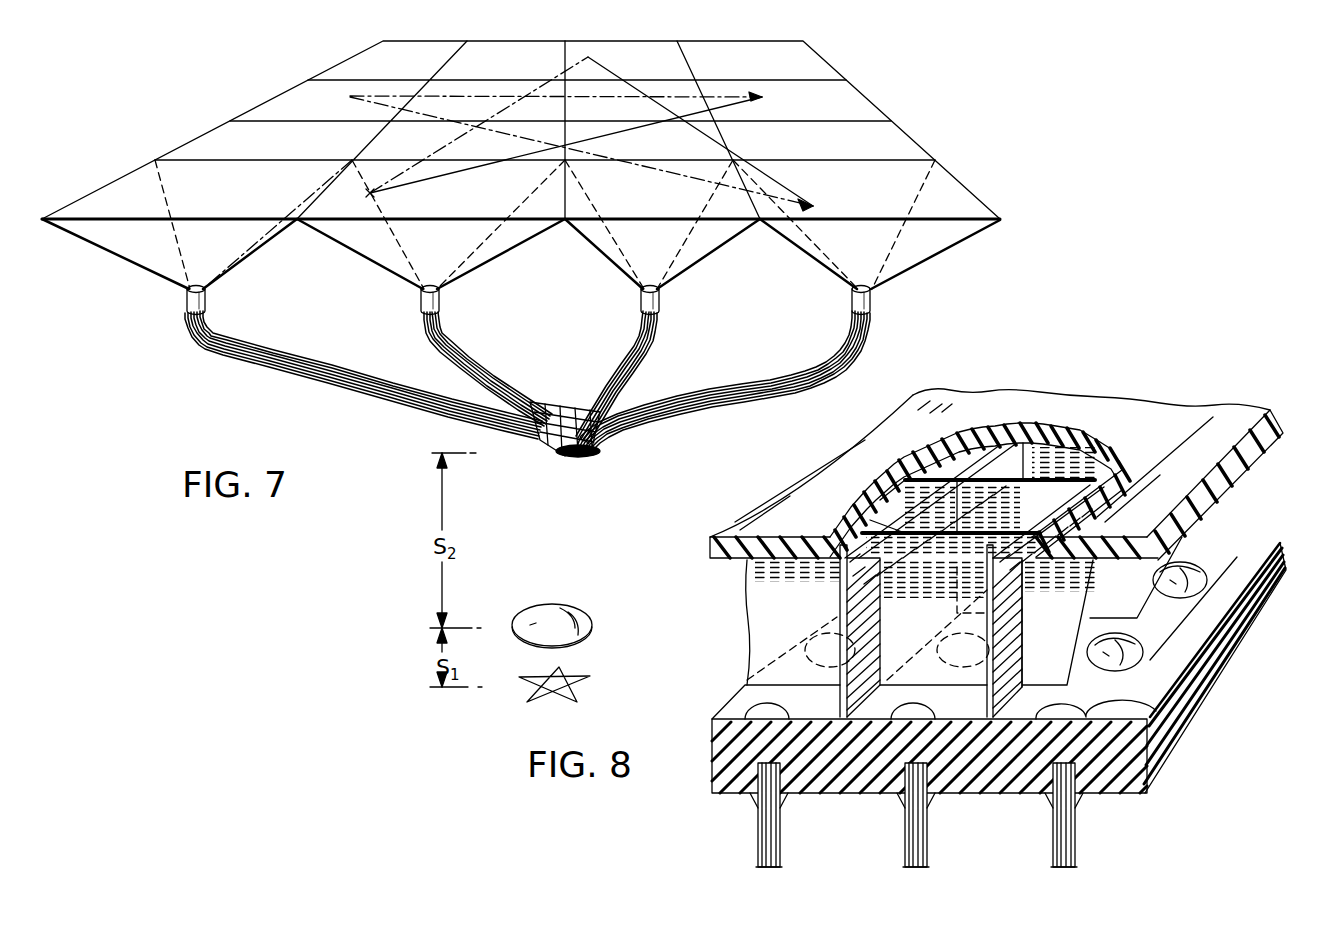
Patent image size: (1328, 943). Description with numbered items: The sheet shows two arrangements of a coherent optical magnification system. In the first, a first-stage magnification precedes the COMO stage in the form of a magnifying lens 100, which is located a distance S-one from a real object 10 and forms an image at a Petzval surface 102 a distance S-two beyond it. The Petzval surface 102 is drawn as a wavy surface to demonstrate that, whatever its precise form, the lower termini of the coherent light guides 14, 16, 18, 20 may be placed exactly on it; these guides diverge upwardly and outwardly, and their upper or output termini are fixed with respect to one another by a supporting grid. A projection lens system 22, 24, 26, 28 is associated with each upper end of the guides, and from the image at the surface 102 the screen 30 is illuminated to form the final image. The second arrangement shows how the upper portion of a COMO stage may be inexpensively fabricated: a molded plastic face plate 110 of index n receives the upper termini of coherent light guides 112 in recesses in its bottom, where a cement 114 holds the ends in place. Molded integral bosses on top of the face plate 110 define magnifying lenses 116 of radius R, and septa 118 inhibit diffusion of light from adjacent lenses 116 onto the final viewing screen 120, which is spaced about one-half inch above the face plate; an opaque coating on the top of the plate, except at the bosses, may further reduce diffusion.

In FIG. 7, the object 10 is at (585, 686).
In FIG. 7, the coherent light guide 14 is at (352, 390).
In FIG. 7, the coherent light guide 16 is at (492, 359).
In FIG. 7, the coherent light guide 18 is at (647, 353).
In FIG. 7, the coherent light guide 20 is at (838, 358).
In FIG. 7, the projection lens system 22 is at (207, 300).
In FIG. 7, the projection lens system 24 is at (440, 300).
In FIG. 7, the projection lens system 26 is at (660, 300).
In FIG. 7, the projection lens system 28 is at (872, 300).
In FIG. 7, the screen 30 is at (897, 150).
In FIG. 7, the magnifying lens 100 is at (590, 623).
In FIG. 7, the Petzval surface 102 is at (548, 402).
In FIG. 8, the face plate 110 is at (1105, 784).
In FIG. 8, the coherent light guides 112 is at (780, 836).
In FIG. 8, the cement 114 is at (928, 805).
In FIG. 8, the lenses 116 is at (1213, 537).
In FIG. 8, the septa 118 is at (838, 606).
In FIG. 8, the viewing screen 120 is at (1122, 405).